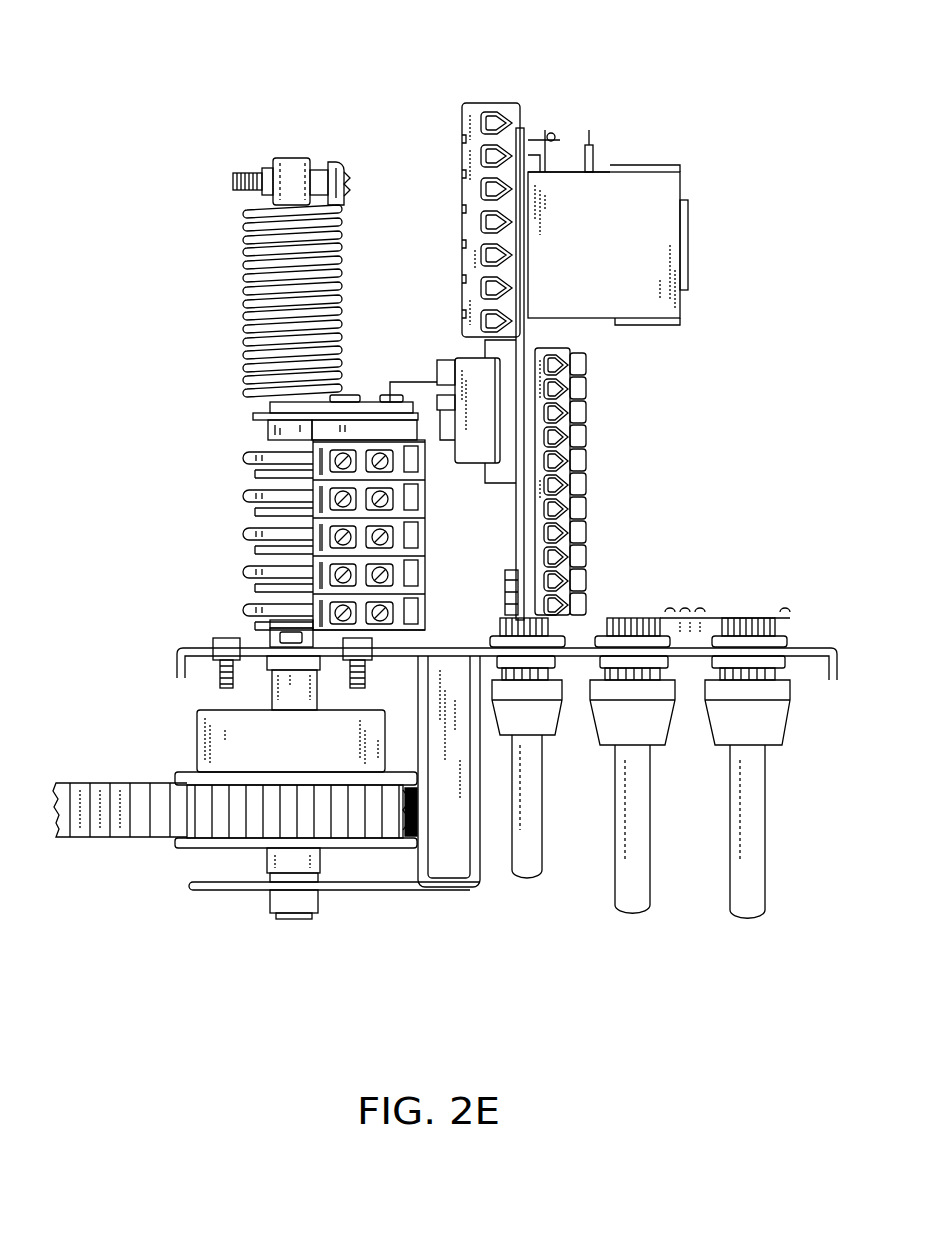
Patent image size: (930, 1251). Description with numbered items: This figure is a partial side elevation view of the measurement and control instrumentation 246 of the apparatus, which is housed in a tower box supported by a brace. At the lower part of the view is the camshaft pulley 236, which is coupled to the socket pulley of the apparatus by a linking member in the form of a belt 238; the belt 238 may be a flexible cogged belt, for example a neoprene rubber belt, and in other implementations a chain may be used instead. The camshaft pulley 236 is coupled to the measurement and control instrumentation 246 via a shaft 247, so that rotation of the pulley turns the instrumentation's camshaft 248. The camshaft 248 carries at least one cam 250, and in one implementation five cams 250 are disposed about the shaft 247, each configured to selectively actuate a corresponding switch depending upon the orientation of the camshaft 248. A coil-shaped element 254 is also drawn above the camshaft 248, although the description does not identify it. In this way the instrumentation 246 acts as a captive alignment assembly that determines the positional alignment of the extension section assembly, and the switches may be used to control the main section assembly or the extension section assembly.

The measurement and control instrumentation 246 is at (317, 118).
The shaft 247 is at (297, 172).
The coil spring 254 is at (343, 257).
The camshaft 248 is at (200, 515).
The cam 250 is at (253, 593).
The belt 238 is at (130, 813).
The camshaft pulley 236 is at (188, 850).